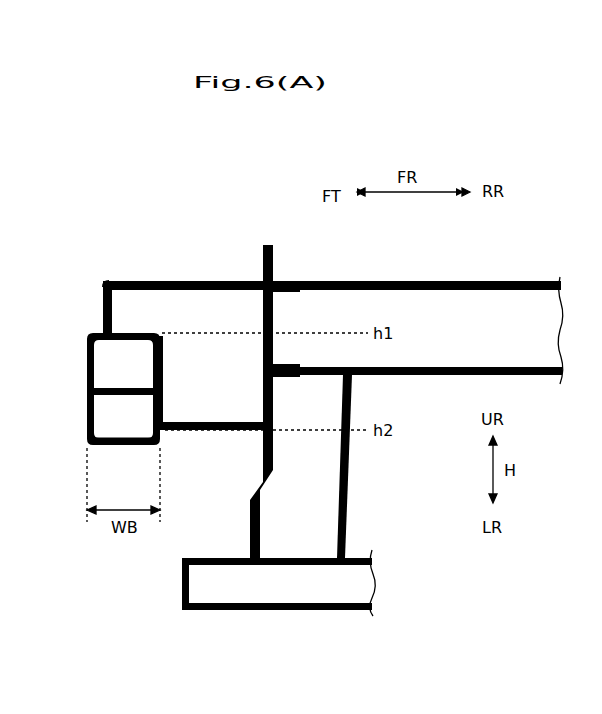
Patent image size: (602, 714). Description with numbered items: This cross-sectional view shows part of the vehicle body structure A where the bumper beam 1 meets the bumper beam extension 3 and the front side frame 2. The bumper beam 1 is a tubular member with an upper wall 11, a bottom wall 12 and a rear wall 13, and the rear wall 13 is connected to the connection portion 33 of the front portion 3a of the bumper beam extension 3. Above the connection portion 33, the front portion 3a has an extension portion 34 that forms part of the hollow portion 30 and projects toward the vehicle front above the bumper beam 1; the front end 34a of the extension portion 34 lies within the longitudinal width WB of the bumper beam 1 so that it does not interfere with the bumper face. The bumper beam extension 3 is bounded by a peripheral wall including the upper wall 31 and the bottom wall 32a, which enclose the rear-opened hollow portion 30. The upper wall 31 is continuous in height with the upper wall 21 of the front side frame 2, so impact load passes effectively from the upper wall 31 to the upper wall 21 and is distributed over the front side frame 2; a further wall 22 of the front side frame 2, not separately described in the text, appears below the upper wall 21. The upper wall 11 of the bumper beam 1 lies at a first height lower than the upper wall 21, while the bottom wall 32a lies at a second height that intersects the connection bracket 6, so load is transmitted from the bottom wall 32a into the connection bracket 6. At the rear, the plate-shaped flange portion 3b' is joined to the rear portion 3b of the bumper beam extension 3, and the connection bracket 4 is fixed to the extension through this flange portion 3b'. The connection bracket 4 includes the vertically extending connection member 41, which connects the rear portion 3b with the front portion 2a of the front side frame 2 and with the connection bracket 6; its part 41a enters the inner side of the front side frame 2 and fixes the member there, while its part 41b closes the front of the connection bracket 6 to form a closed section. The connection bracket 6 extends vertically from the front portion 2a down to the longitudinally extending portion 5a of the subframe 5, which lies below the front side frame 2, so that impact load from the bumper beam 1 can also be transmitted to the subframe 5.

The bumper beam 1 is at (142, 393).
The upper wall 11 is at (103, 331).
The bottom wall 12 is at (129, 447).
The rear wall 13 is at (148, 398).
The front side frame 2 is at (413, 328).
The upper wall 21 is at (424, 279).
The lower plate of floor member 22 is at (438, 378).
The front portion 2a is at (308, 272).
The bumper beam extension 3 is at (162, 305).
The hollow portion 30 is at (215, 324).
The upper wall 31 is at (200, 280).
The bottom wall 32a is at (233, 421).
The connection portion 33 is at (168, 380).
The extension portion 34 is at (109, 280).
The front end 34a is at (103, 300).
The front portion 3a is at (134, 278).
The rear portion 3b is at (228, 250).
The flange portion 3b' is at (239, 227).
The connection bracket 4 is at (262, 370).
The connection member 41 is at (274, 262).
The part 41a is at (298, 292).
The part 41b is at (249, 512).
The subframe 5 is at (256, 603).
The longitudinally extending portion 5a is at (181, 583).
The connection bracket 6 is at (353, 485).
The body structure A is at (522, 254).